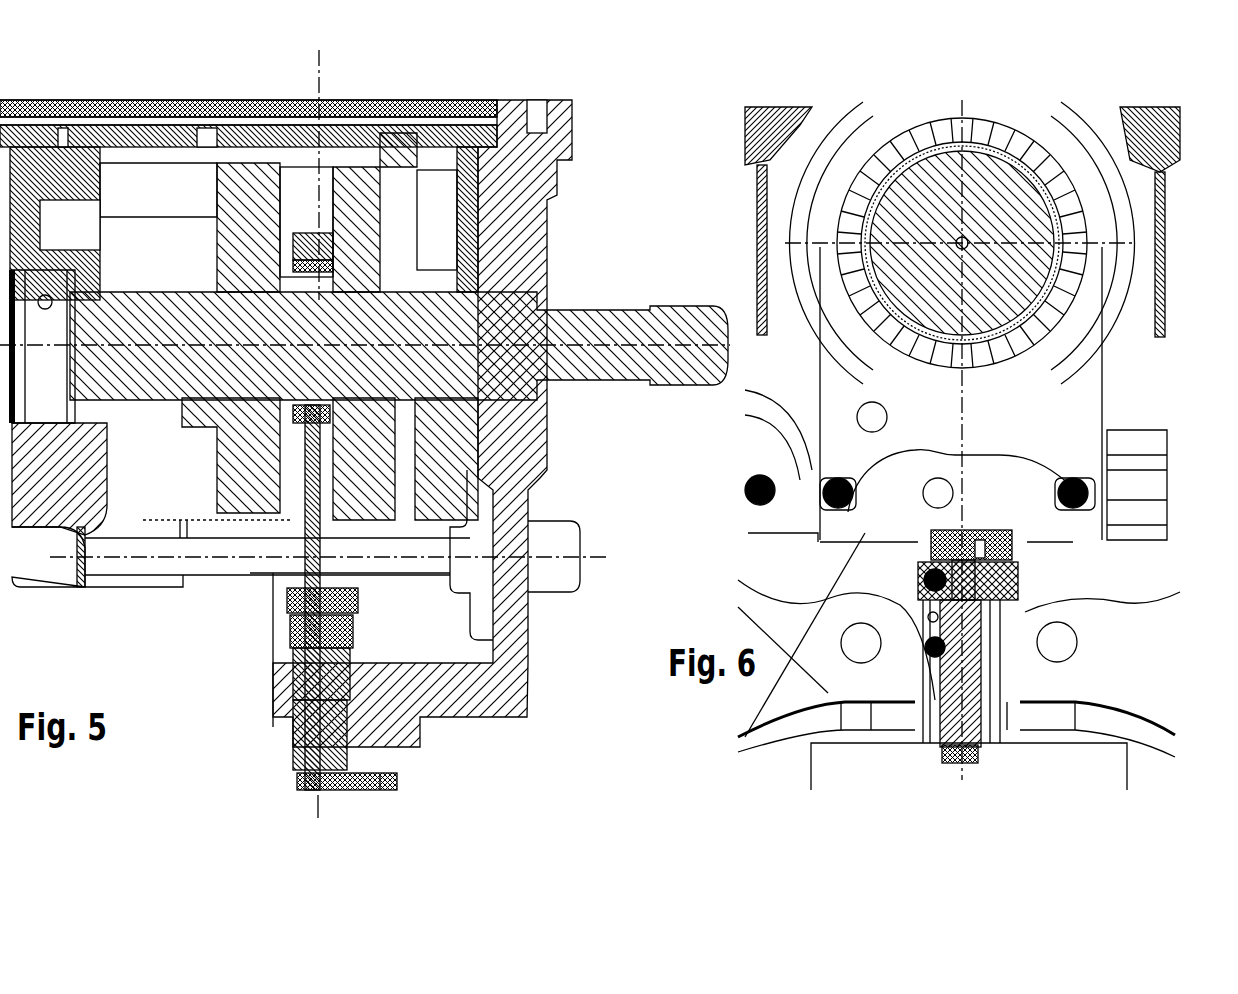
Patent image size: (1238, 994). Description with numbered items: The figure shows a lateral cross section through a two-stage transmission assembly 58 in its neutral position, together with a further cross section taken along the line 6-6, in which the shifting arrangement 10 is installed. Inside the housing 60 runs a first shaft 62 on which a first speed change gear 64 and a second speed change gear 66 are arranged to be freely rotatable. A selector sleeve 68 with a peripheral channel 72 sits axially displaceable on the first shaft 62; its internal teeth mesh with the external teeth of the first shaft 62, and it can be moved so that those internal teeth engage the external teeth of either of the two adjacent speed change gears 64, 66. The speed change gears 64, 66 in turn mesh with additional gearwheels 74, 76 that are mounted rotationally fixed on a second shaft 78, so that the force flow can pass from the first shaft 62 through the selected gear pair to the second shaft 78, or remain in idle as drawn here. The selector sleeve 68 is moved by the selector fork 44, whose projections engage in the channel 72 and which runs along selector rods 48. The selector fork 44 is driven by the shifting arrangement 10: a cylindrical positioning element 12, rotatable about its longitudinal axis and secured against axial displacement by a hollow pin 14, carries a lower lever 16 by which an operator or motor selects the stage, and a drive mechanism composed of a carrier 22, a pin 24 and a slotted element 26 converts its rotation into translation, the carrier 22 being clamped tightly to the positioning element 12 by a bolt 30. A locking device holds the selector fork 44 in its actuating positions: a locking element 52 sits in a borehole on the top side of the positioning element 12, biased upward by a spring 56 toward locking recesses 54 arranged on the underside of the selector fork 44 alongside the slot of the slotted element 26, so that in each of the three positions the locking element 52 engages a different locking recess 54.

In FIG. 5, the section line 6 is at (322, 47).
In FIG. 5, the shifting arrangement 10 is at (291, 794).
In FIG. 6, the shifting arrangement 10 is at (1100, 723).
In FIG. 5, the positioning element 12 is at (297, 767).
In FIG. 6, the hollow pin 14 is at (930, 590).
In FIG. 5, the lower lever 16 is at (350, 773).
In FIG. 5, the carrier 22 is at (283, 648).
In FIG. 6, the carrier 22 is at (1017, 577).
In FIG. 6, the pin 24 is at (1003, 600).
In FIG. 5, the slotted element 26 is at (277, 592).
In FIG. 6, the slotted element 26 is at (967, 528).
In FIG. 6, the bolt 30 is at (862, 600).
In FIG. 5, the selector fork 44 is at (262, 490).
In FIG. 6, the selector fork 44 is at (868, 535).
In FIG. 5, the selector rods 48 is at (108, 565).
In FIG. 6, the selector rods 48 is at (890, 457).
In FIG. 5, the locking element 52 is at (273, 703).
In FIG. 6, the locking element 52 is at (998, 600).
In FIG. 5, the locking recesses 54 is at (358, 594).
In FIG. 6, the locking recesses 54 is at (927, 530).
In FIG. 5, the spring 56 is at (293, 730).
In FIG. 6, the spring 56 is at (978, 610).
In FIG. 5, the transmission assembly 58 is at (478, 92).
In FIG. 6, the transmission assembly 58 is at (845, 131).
In FIG. 5, the housing 60 is at (510, 197).
In FIG. 5, the first shaft 62 is at (243, 240).
In FIG. 6, the first shaft 62 is at (942, 192).
In FIG. 5, the first speed change gear 64 is at (213, 218).
In FIG. 5, the second speed change gear 66 is at (400, 100).
In FIG. 5, the selector sleeve 68 is at (312, 218).
In FIG. 6, the selector sleeve 68 is at (1050, 173).
In FIG. 5, the peripheral channel 72 is at (322, 210).
In FIG. 5, the gearwheel 74 is at (266, 255).
In FIG. 5, the gearwheel 76 is at (450, 100).
In FIG. 5, the second shaft 78 is at (495, 100).